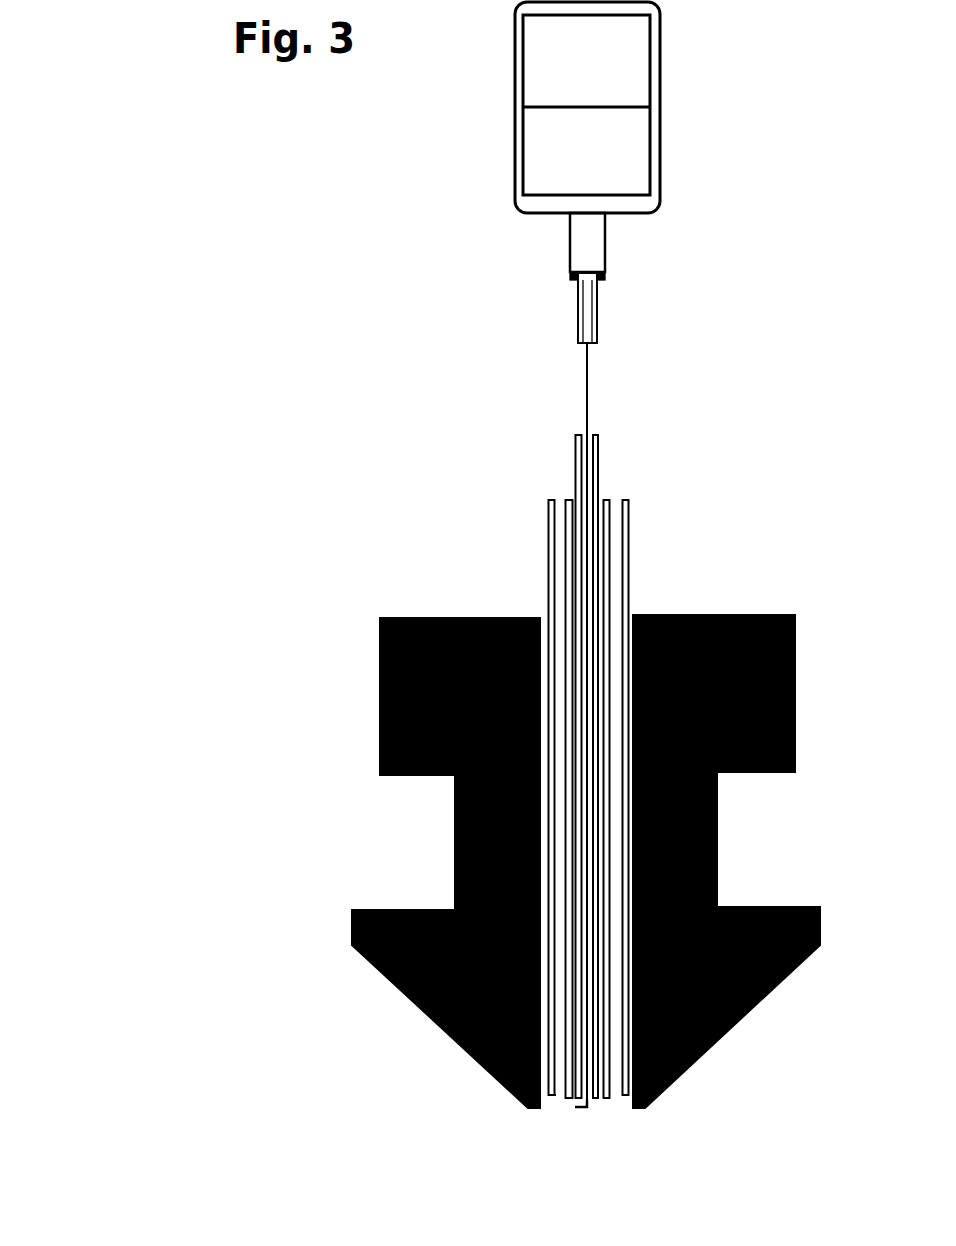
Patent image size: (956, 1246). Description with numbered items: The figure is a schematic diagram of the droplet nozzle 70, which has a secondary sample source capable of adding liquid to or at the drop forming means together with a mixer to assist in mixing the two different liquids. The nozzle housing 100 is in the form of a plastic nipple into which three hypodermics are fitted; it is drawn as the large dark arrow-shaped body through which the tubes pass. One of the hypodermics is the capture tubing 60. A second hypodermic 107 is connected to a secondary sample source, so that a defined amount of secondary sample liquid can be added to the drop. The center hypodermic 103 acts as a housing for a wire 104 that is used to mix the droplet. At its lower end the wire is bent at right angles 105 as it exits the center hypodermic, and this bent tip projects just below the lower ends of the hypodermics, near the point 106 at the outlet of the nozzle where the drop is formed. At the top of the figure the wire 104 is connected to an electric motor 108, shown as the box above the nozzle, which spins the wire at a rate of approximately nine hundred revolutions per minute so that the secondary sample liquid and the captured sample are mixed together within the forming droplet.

The droplet nozzle 70 is at (223, 746).
The electric motor 108 is at (587, 107).
The wire 104 is at (598, 347).
The center hypodermic 103 is at (602, 447).
The capture tubing 60 is at (552, 513).
The second hypodermic 107 is at (627, 510).
The nozzle housing 100 is at (437, 627).
The right-angle bend of wire 105 is at (582, 1110).
The tube outlet 106 is at (557, 1108).